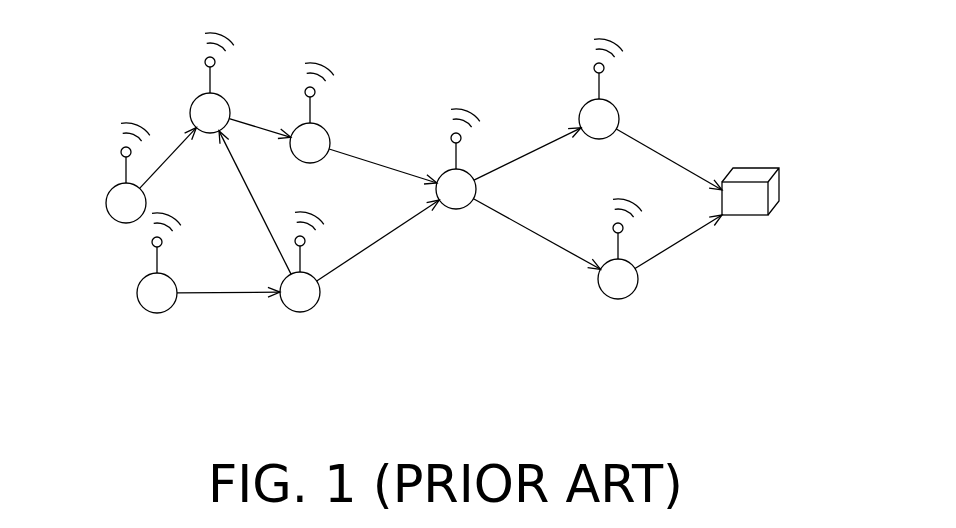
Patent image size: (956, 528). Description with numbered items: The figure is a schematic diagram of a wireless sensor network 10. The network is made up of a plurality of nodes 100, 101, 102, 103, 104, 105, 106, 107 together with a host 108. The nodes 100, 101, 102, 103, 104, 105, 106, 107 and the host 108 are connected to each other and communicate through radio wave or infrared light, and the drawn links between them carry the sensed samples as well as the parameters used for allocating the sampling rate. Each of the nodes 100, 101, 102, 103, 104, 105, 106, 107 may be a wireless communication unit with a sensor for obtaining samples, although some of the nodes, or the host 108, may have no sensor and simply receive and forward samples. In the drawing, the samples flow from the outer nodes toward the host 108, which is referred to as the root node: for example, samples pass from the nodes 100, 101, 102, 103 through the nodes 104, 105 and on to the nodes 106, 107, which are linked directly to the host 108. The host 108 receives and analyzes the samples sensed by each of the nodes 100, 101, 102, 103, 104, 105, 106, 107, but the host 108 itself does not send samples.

The wireless sensor network 10 is at (784, 395).
The node 100 is at (108, 173).
The node 101 is at (159, 281).
The node 102 is at (191, 83).
The node 103 is at (302, 281).
The node 104 is at (331, 113).
The node 105 is at (458, 180).
The node 106 is at (619, 89).
The node 107 is at (620, 271).
The host 108 is at (760, 173).